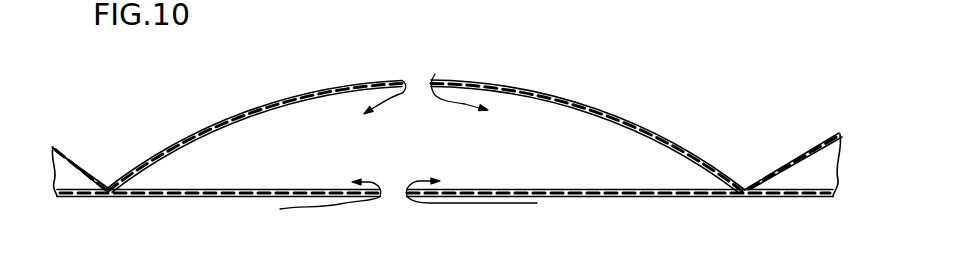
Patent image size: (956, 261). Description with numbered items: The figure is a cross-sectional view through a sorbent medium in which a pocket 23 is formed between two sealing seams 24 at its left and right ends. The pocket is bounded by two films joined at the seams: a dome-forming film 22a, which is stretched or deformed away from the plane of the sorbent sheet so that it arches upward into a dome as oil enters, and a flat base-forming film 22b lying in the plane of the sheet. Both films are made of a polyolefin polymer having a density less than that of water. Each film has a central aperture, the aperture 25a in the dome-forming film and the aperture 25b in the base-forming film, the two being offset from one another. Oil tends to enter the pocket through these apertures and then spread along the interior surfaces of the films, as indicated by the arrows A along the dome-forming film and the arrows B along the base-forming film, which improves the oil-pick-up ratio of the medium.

The pocket 23 is at (147, 112).
The dome-forming film 22a is at (620, 44).
The base-forming film 22b is at (642, 197).
The sealing seam 24 is at (106, 194).
The central aperture 25a is at (418, 75).
The central aperture 25b is at (388, 198).
The arrow A is at (435, 74).
The arrow B is at (546, 212).